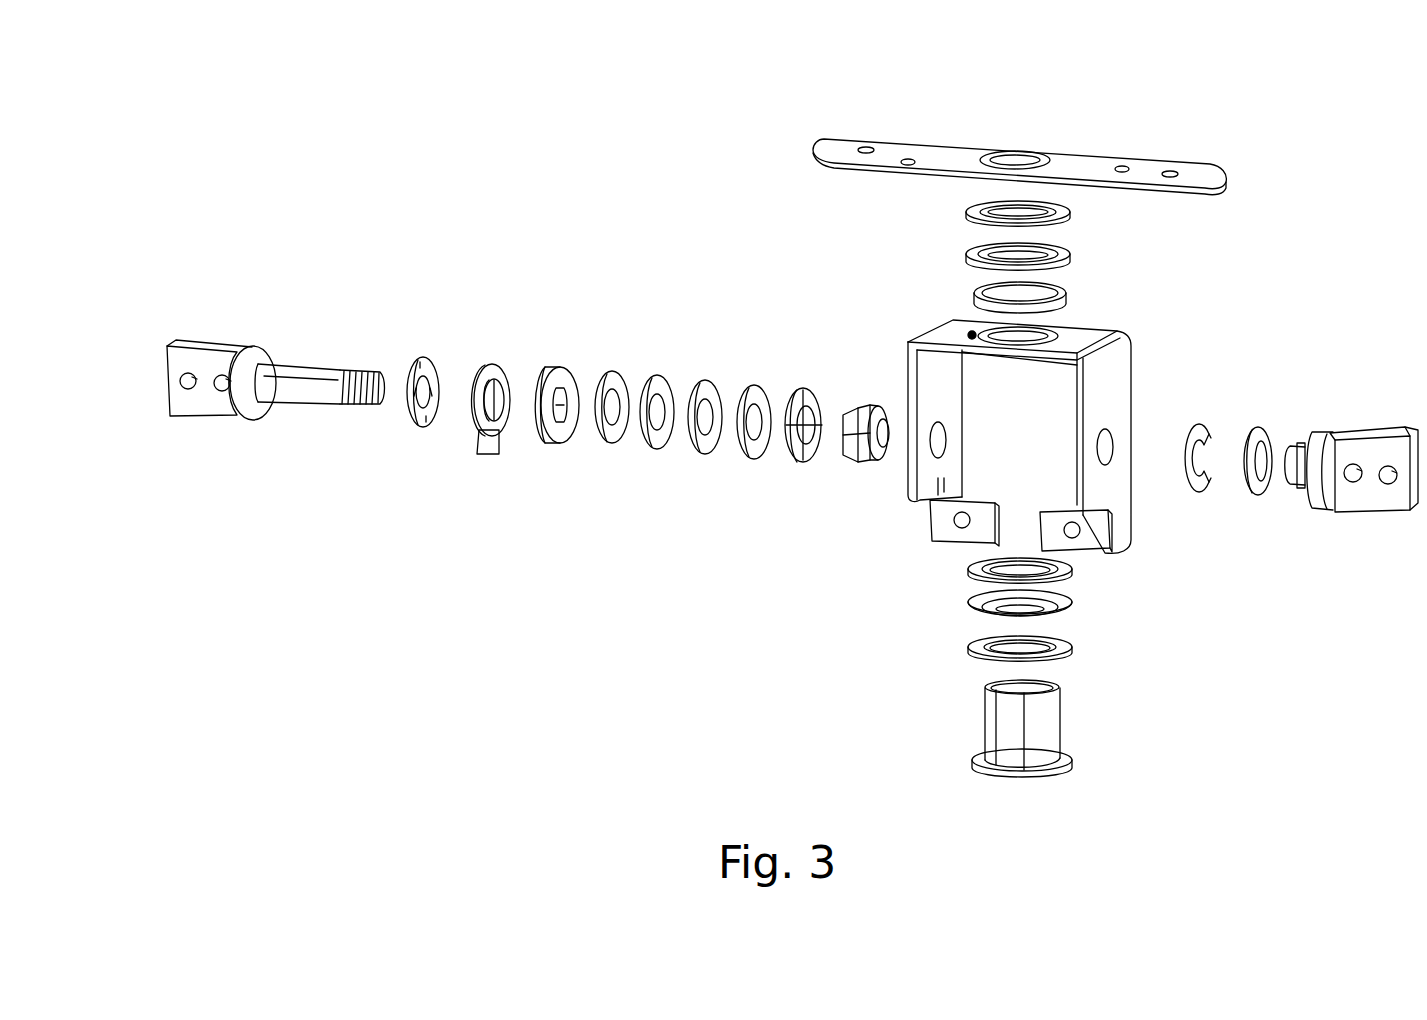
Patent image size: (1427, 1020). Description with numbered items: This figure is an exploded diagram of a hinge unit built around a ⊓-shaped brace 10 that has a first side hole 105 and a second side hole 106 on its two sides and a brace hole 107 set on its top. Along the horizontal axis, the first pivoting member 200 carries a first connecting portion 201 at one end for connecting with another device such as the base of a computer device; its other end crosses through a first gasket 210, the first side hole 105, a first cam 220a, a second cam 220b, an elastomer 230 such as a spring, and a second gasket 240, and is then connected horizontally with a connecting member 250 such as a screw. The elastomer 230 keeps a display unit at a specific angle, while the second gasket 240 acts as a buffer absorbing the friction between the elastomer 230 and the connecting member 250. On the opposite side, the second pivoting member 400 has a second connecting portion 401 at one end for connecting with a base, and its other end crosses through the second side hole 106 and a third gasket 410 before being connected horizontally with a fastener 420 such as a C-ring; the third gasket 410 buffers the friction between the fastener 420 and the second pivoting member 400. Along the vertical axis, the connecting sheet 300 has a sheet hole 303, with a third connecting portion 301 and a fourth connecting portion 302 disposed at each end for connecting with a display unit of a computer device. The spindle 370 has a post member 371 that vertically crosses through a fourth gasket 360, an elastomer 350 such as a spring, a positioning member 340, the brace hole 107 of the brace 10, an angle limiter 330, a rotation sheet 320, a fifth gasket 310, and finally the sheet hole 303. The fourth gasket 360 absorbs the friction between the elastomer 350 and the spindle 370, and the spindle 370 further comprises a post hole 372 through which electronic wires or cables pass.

The brace 10 is at (1122, 360).
The first side hole 105 is at (936, 422).
The second side hole 106 is at (1112, 446).
The brace hole 107 is at (972, 334).
The first pivoting member 200 is at (205, 360).
The first connecting portion 201 is at (188, 390).
The first gasket 210 is at (421, 430).
The first cam 220a is at (484, 365).
The second cam 220b is at (543, 445).
The elastomer 230 is at (613, 372).
The second gasket 240 is at (798, 462).
The connecting member 250 is at (858, 462).
The connecting sheet 300 is at (1095, 155).
The third connecting portion 301 is at (892, 152).
The fourth connecting portion 302 is at (1152, 178).
The sheet hole 303 is at (1012, 158).
The fifth gasket 310 is at (1074, 215).
The rotation sheet 320 is at (1074, 258).
The angle limiter 330 is at (1072, 298).
The positioning member 340 is at (1074, 578).
The elastomer 350 is at (1074, 612).
The fourth gasket 360 is at (1074, 655).
The spindle 370 is at (1074, 765).
The post member 371 is at (1055, 712).
The post hole 372 is at (984, 683).
The second pivoting member 400 is at (1372, 455).
The second connecting portion 401 is at (1353, 483).
The third gasket 410 is at (1256, 495).
The fastener 420 is at (1195, 493).